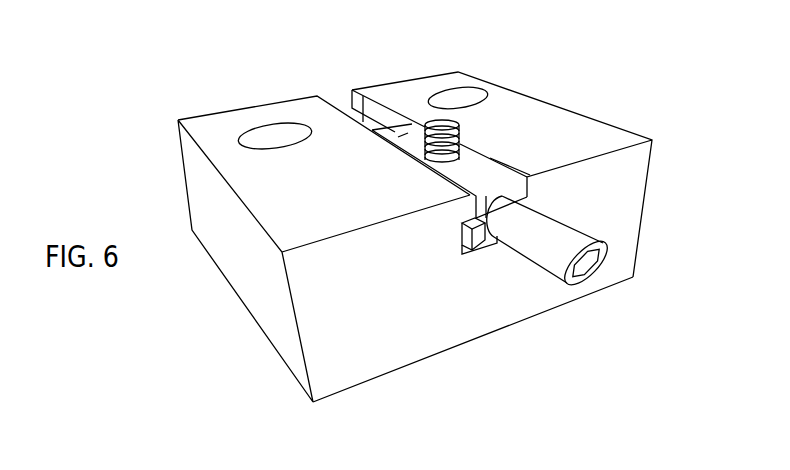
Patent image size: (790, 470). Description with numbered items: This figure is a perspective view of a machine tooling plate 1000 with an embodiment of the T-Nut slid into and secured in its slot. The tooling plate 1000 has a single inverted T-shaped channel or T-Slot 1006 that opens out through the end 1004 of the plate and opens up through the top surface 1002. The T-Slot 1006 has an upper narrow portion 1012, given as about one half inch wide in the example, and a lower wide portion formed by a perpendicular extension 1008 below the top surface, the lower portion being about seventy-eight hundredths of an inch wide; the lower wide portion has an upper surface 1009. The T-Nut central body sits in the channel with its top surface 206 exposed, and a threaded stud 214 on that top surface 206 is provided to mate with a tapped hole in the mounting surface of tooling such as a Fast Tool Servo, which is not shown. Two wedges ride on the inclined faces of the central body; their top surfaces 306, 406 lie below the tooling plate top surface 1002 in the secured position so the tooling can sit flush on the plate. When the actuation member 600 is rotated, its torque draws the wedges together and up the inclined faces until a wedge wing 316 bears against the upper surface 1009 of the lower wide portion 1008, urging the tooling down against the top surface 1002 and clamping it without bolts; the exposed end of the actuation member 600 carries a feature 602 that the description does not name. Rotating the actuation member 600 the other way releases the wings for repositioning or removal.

The tooling plate 1000 is at (740, 137).
The top surface 1002 is at (568, 122).
The end 1004 is at (372, 357).
The T-Slot 1006 is at (340, 98).
The upper narrow portion 1012 is at (369, 122).
The central body top surface 206 is at (467, 160).
The threaded stud 214 is at (462, 152).
The wedge top surface 306 is at (493, 178).
The wing 316 is at (485, 238).
The wedge top surface 406 is at (400, 139).
The actuation member 600 is at (565, 227).
The hex socket 602 is at (587, 265).
The perpendicular extension 1008 is at (467, 250).
The upper surface 1009 is at (472, 222).